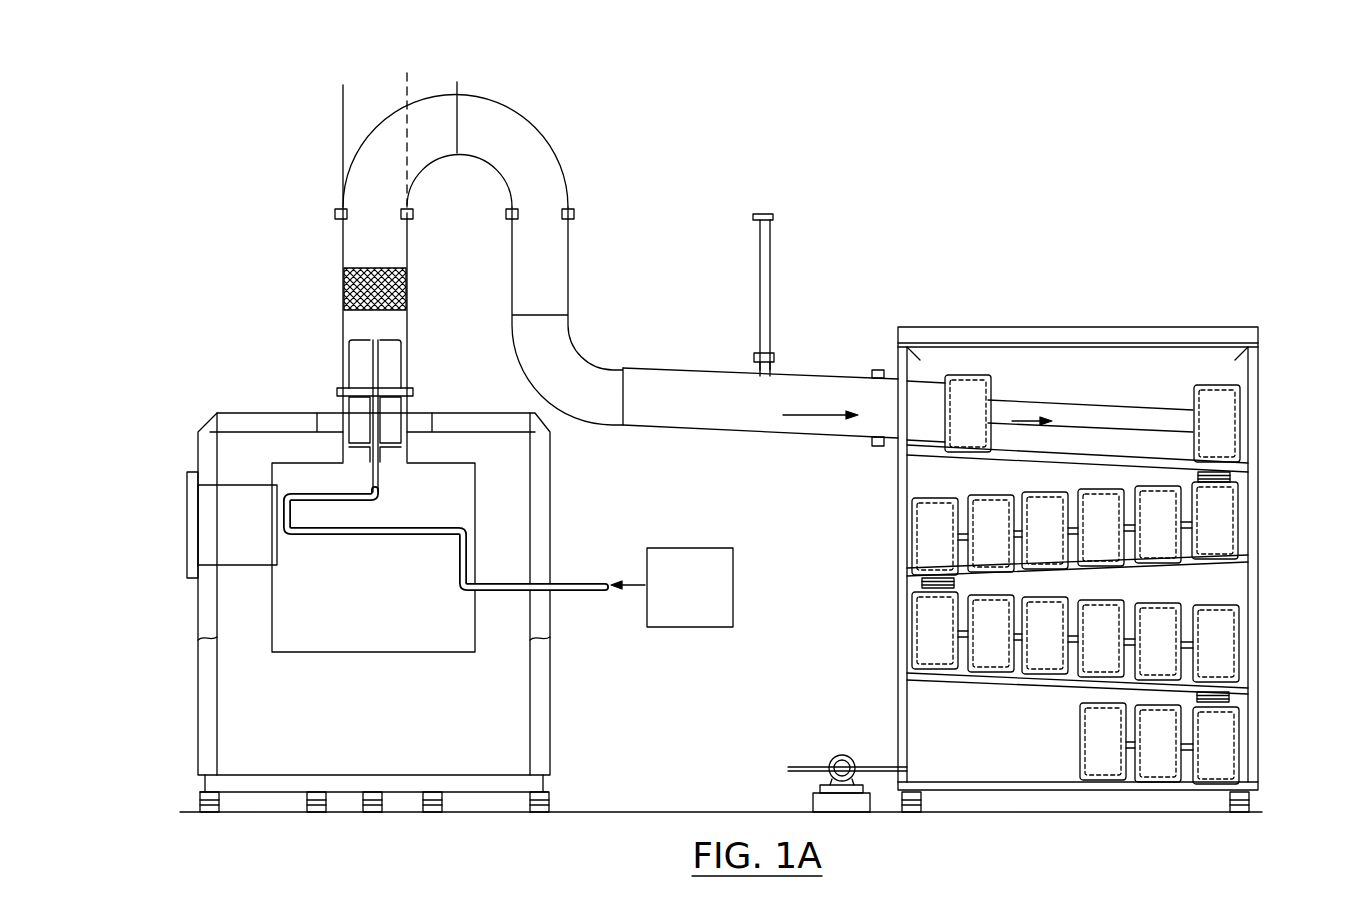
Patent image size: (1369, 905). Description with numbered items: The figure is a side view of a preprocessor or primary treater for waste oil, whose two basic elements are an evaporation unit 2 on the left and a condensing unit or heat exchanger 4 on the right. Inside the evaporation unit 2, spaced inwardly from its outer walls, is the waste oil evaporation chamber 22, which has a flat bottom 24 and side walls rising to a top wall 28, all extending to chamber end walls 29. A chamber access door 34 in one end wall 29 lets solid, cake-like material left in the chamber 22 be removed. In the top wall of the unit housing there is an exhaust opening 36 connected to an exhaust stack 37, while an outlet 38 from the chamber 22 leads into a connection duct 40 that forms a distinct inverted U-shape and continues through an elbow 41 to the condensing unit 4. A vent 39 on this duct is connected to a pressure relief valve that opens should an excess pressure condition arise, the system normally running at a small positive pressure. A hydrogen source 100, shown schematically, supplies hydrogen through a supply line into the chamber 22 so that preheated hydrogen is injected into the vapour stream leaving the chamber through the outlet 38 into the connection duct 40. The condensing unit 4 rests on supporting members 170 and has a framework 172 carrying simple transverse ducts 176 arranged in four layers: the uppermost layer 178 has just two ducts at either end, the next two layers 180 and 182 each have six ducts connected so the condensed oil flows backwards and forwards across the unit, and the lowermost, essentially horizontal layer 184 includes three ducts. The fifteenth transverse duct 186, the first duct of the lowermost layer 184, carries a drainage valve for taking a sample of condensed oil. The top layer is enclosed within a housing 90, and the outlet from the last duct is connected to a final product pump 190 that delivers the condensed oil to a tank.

The evaporation unit 2 is at (571, 720).
The condensing unit 4 is at (1272, 381).
The waste oil evaporation chamber 22 is at (360, 599).
The flat bottom 24 is at (390, 654).
The top wall 28 is at (288, 462).
The chamber end wall 29 is at (478, 513).
The chamber access door 34 is at (187, 502).
The exhaust opening 36 is at (408, 396).
The exhaust stack 37 is at (368, 105).
The outlet 38 is at (343, 396).
The vent 39 is at (772, 278).
The connection duct 40 is at (390, 240).
The elbow 41 is at (578, 368).
The housing 90 is at (1052, 327).
The hydrogen source 100 is at (670, 599).
The supporting members 170 is at (1258, 790).
The framework 172 is at (1262, 540).
The transverse ducts 176 is at (1215, 400).
The uppermost layer of ducts 178 is at (950, 455).
The second layer of ducts 180 is at (918, 518).
The third layer of ducts 182 is at (918, 625).
The lowermost layer of ducts 184 is at (1217, 726).
The fifteenth transverse duct 186 is at (1222, 785).
The final product pump 190 is at (840, 755).